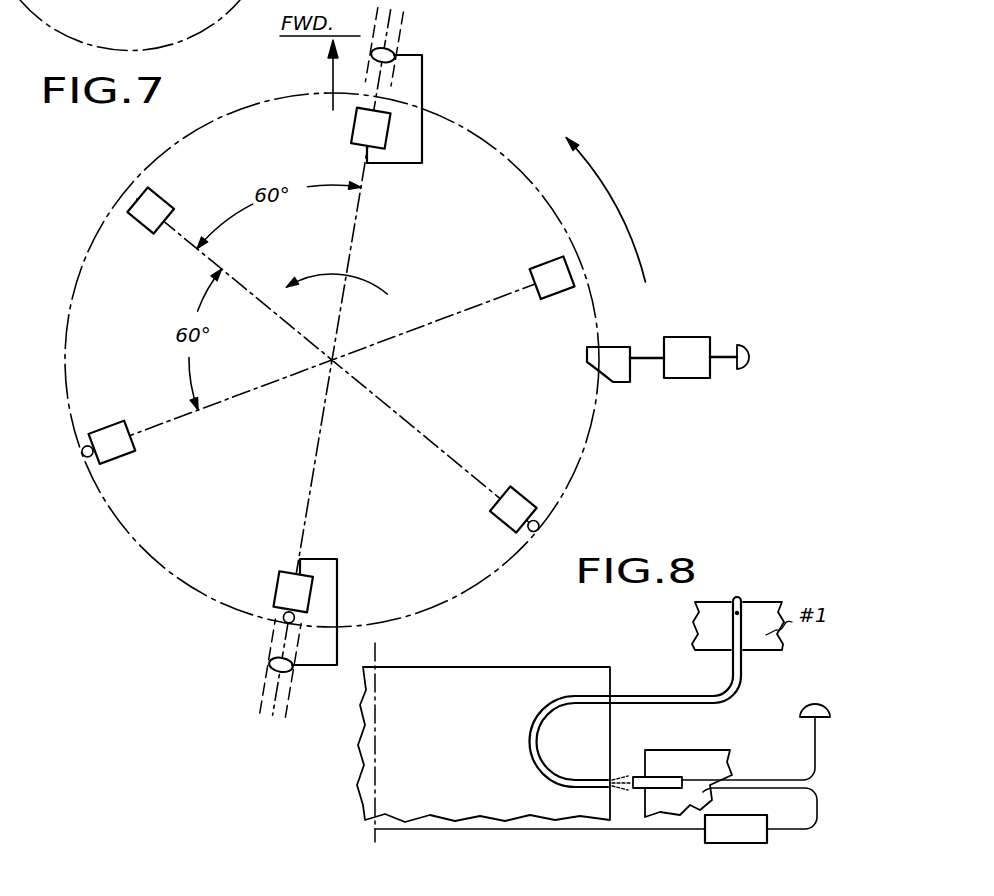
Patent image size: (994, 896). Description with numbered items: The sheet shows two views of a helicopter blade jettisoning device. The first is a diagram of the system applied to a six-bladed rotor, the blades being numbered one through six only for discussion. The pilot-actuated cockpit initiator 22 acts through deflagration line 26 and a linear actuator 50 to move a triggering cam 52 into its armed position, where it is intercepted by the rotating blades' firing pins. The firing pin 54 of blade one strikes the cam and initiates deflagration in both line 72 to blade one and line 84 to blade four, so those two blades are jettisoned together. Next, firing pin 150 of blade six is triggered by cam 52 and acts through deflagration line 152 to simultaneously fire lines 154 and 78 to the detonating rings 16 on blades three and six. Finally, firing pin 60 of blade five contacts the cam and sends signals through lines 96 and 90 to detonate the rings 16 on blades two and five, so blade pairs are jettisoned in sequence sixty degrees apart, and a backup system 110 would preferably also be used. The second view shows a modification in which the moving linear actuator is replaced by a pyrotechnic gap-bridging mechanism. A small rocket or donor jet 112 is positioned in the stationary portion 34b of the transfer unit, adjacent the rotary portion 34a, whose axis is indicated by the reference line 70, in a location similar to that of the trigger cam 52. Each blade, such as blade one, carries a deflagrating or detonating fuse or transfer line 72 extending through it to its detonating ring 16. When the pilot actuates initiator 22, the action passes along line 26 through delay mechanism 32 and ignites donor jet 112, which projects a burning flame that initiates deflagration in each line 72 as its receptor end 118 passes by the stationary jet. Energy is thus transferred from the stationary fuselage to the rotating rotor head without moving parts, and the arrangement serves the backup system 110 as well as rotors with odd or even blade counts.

In FIG. 7, the detonating ring 16 is at (394, 50).
In FIG. 8, the detonating ring 16 is at (737, 613).
In FIG. 7, the cockpit initiator 22 is at (746, 354).
In FIG. 8, the cockpit initiator 22 is at (815, 702).
In FIG. 7, the deflagration line 26 is at (721, 356).
In FIG. 8, the deflagration line 26 is at (813, 733).
In FIG. 8, the delay mechanism 32 is at (750, 841).
In FIG. 8, the rotary portion of transfer unit 34a is at (523, 677).
In FIG. 8, the stationary portion of transfer unit 34b is at (703, 760).
In FIG. 7, the linear actuator 50 is at (684, 349).
In FIG. 7, the triggering cam 52 is at (590, 361).
In FIG. 7, the firing pin 54 is at (540, 522).
In FIG. 7, the firing pin 60 is at (82, 455).
In FIG. 8, the reference plane 70 is at (380, 735).
In FIG. 7, the transfer line 72 is at (491, 509).
In FIG. 8, the transfer line 72 is at (530, 742).
In FIG. 7, the deflagration line 78 is at (424, 93).
In FIG. 7, the deflagration line 84 is at (170, 203).
In FIG. 7, the deflagration line 90 is at (133, 438).
In FIG. 7, the deflagration line 96 is at (553, 300).
In FIG. 8, the backup blade jettisoning system 110 is at (817, 812).
In FIG. 8, the donor jet 112 is at (655, 780).
In FIG. 8, the receptor 118 is at (607, 780).
In FIG. 7, the firing pin 150 is at (282, 618).
In FIG. 7, the deflagration line 152 is at (312, 470).
In FIG. 7, the deflagration line 154 is at (337, 585).